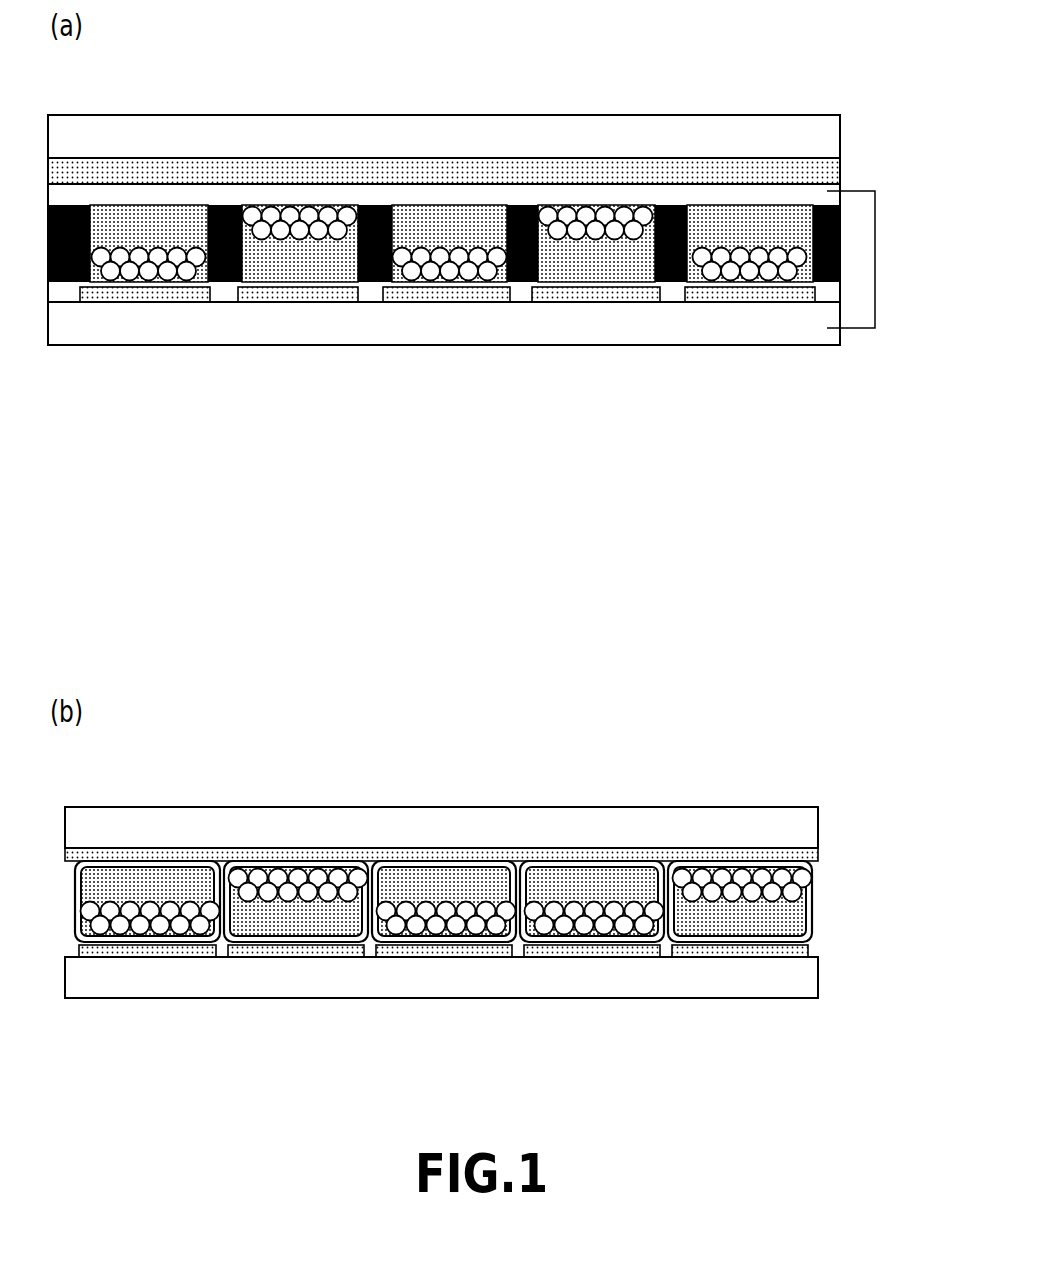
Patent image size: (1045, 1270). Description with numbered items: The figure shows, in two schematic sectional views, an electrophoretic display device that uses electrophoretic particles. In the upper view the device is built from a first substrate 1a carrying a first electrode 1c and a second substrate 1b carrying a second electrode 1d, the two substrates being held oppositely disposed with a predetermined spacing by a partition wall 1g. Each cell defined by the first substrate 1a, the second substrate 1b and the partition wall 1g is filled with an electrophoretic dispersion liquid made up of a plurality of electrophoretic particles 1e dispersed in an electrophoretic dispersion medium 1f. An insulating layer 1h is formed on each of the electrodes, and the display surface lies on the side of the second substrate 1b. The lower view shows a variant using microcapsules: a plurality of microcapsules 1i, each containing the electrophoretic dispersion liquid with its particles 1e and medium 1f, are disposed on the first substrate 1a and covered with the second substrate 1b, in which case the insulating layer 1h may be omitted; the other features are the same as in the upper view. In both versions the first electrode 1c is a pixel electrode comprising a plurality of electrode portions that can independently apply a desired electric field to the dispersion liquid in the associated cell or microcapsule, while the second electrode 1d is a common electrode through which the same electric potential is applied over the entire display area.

The first substrate 1a is at (226, 322).
The second substrate 1b is at (302, 140).
The first electrode 1c is at (432, 293).
The second electrode 1d is at (105, 170).
The electrophoretic particles 1e is at (717, 250).
The electrophoretic dispersion medium 1f is at (447, 215).
The partition wall 1g is at (692, 287).
The insulating layer 1h is at (875, 245).
The microcapsules 1i is at (812, 893).